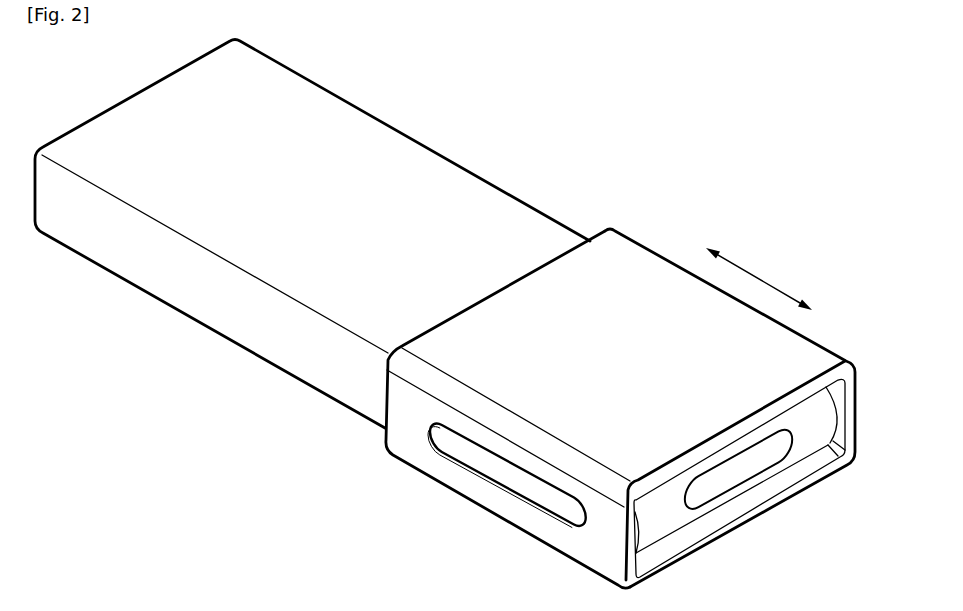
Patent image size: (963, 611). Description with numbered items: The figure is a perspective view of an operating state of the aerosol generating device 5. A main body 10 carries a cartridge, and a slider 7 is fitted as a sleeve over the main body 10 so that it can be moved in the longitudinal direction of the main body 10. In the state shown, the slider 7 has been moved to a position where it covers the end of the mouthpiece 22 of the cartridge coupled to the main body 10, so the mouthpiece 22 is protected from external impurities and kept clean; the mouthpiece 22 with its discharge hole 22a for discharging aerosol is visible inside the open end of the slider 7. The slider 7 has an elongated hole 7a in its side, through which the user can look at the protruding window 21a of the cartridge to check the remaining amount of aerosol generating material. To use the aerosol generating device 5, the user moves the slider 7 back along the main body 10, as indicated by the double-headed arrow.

The aerosol generating device 5 is at (559, 75).
The main body 10 is at (303, 367).
The slider 7 is at (487, 493).
The elongated hole 7a is at (448, 456).
The protruding window 21a is at (543, 493).
The mouthpiece 22 is at (660, 522).
The discharge hole 22a is at (718, 468).